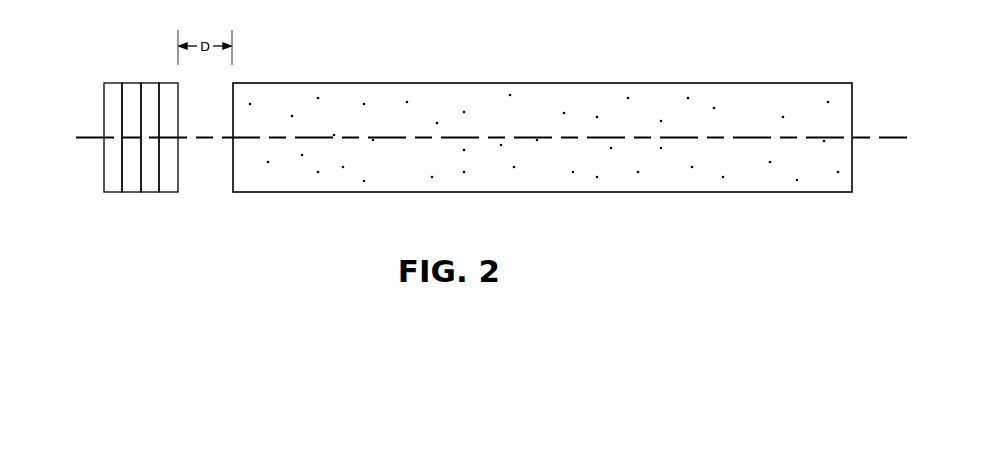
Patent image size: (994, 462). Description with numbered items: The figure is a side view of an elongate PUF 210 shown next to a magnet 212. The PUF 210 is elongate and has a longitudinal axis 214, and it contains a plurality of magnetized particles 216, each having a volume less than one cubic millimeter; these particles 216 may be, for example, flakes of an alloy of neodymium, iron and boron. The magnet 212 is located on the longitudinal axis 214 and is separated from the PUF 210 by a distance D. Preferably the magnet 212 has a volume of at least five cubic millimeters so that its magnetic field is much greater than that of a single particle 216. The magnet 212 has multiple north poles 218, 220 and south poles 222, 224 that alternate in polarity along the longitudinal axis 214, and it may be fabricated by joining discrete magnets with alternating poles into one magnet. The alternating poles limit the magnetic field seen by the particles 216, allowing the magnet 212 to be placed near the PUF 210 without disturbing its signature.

The PUF 210 is at (542, 108).
The magnet 212 is at (131, 137).
The longitudinal axis 214 is at (893, 135).
The magnetized particles 216 is at (588, 101).
The north pole 218 is at (112, 193).
The north pole 220 is at (148, 193).
The south pole 222 is at (133, 193).
The south pole 224 is at (168, 193).